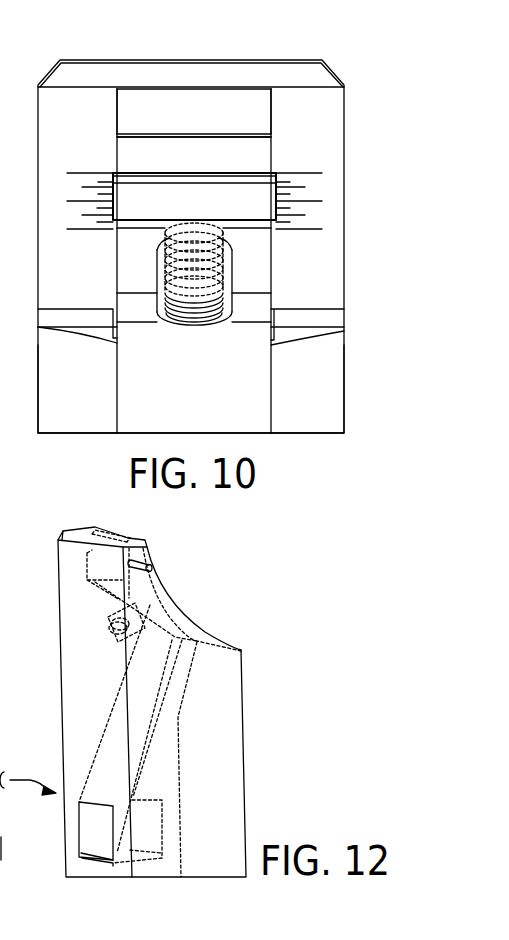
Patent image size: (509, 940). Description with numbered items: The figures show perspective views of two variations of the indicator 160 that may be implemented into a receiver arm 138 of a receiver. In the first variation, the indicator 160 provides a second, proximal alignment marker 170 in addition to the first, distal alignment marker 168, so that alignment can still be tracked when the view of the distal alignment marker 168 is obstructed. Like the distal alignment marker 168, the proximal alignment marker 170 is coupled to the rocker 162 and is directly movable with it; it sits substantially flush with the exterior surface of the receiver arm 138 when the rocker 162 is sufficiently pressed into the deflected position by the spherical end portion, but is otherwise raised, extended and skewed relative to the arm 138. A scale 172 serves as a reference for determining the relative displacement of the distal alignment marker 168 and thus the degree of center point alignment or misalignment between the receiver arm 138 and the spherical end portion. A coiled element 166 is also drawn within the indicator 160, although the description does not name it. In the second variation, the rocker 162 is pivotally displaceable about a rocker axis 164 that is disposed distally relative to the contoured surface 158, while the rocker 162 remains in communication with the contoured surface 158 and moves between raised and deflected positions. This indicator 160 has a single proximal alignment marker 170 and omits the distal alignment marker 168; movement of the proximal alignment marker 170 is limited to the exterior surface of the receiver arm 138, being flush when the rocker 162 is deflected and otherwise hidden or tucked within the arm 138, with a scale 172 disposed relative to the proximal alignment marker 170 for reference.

In FIG. 10, the receiver arm 138 is at (323, 392).
In FIG. 12, the receiver arm 138 is at (220, 743).
In FIG. 12, the contoured surface 158 is at (212, 642).
In FIG. 10, the indicator 160 is at (328, 150).
In FIG. 10, the rocker 162 is at (212, 122).
In FIG. 12, the rocker 162 is at (132, 588).
In FIG. 10, the rocker axis 164 is at (308, 318).
In FIG. 12, the rocker axis 164 is at (140, 558).
In FIG. 10, the spring 166 is at (203, 268).
In FIG. 12, the spring 166 is at (118, 627).
In FIG. 10, the distal alignment marker 168 is at (152, 155).
In FIG. 12, the proximal alignment marker 170 is at (97, 836).
In FIG. 10, the scale 172 is at (303, 198).